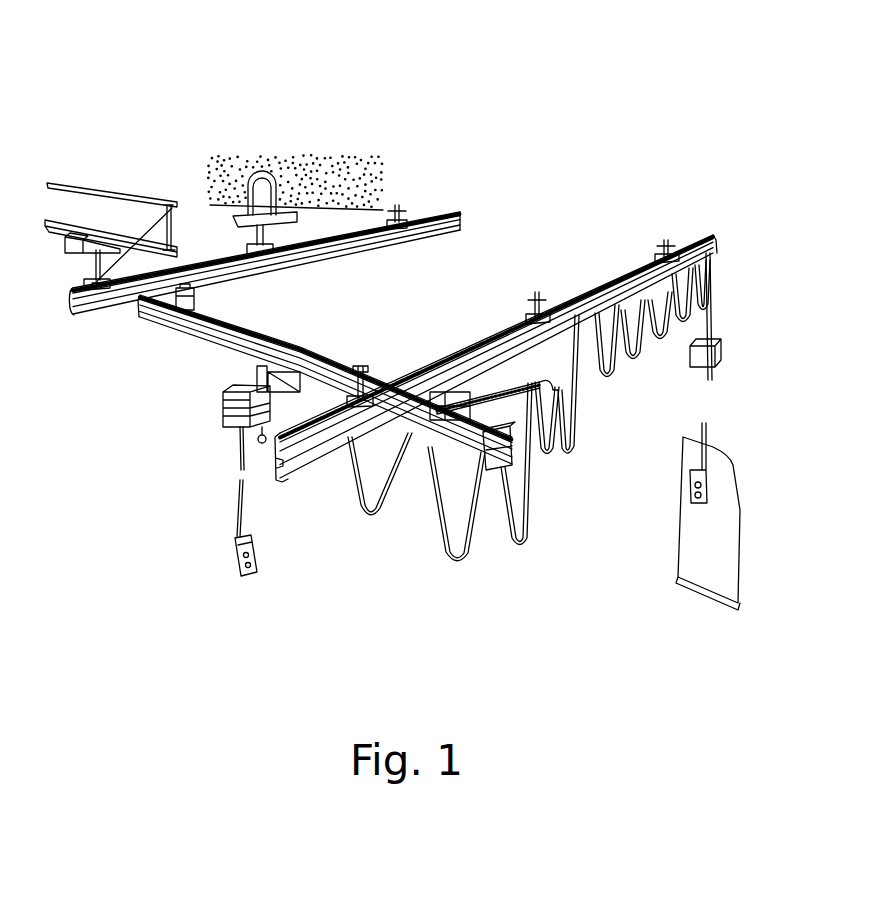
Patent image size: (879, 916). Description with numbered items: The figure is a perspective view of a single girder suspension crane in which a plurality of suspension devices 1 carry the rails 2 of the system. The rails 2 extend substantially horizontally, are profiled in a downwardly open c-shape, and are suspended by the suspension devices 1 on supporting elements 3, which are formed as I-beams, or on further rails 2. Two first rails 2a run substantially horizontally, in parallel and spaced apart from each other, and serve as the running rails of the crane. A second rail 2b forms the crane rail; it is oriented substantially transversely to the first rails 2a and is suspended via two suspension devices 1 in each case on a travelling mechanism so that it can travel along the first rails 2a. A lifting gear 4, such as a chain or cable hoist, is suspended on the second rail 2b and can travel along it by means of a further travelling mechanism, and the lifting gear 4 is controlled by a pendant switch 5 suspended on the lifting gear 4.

The suspension device 1 is at (177, 203).
The rail 2 is at (385, 250).
The first rail 2a is at (422, 213).
The second rail 2b is at (192, 323).
The supporting element 3 is at (95, 203).
The lifting gear 4 is at (230, 413).
The pendant switch 5 is at (230, 552).